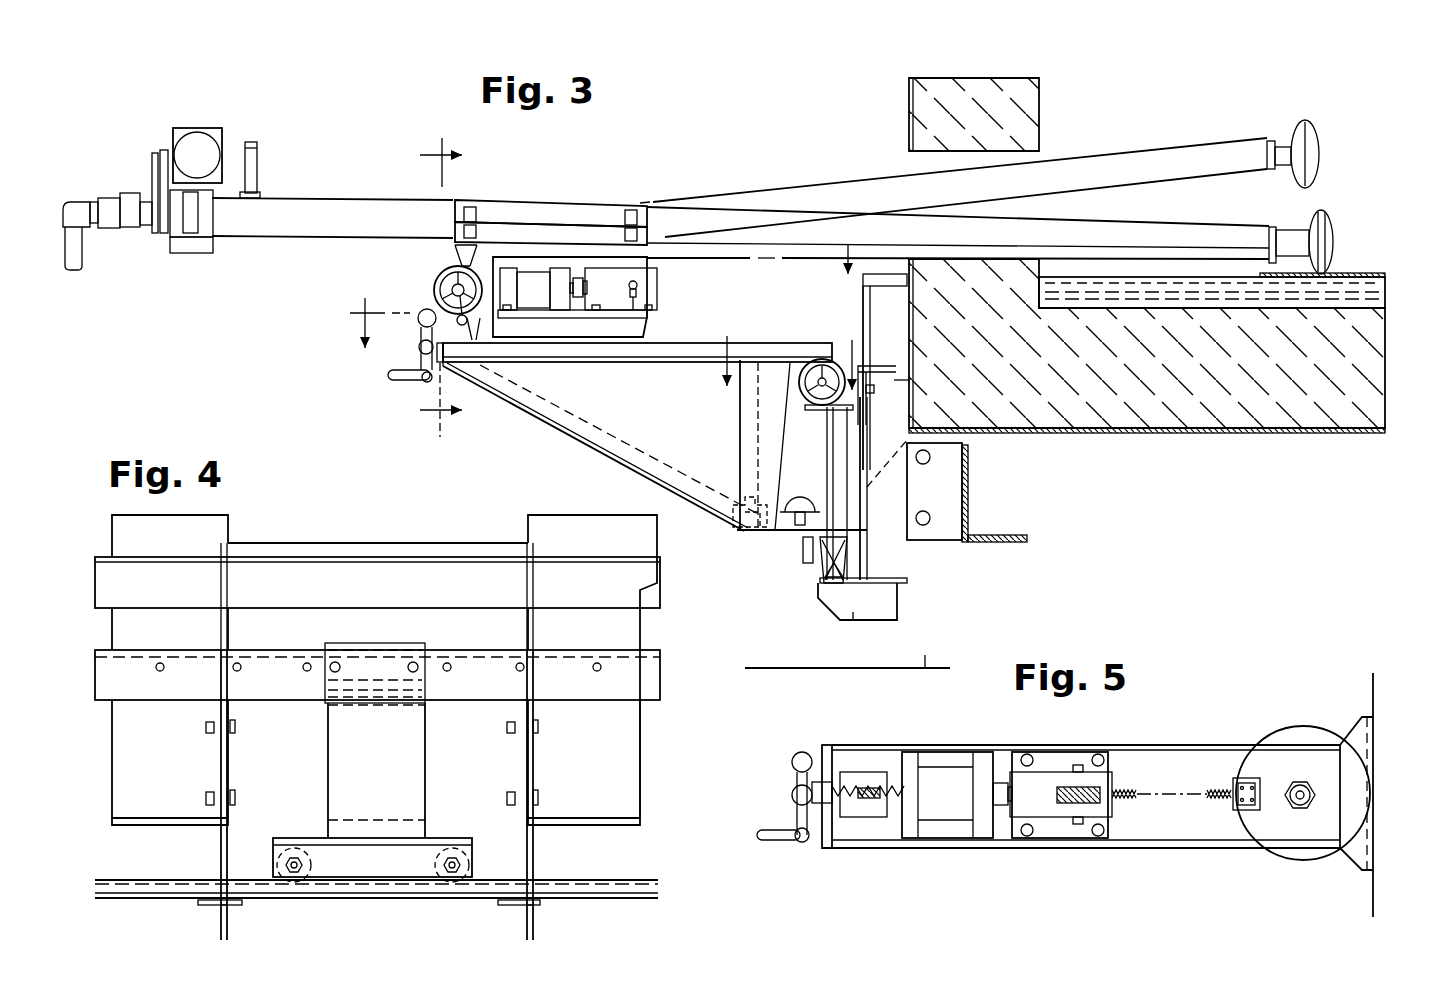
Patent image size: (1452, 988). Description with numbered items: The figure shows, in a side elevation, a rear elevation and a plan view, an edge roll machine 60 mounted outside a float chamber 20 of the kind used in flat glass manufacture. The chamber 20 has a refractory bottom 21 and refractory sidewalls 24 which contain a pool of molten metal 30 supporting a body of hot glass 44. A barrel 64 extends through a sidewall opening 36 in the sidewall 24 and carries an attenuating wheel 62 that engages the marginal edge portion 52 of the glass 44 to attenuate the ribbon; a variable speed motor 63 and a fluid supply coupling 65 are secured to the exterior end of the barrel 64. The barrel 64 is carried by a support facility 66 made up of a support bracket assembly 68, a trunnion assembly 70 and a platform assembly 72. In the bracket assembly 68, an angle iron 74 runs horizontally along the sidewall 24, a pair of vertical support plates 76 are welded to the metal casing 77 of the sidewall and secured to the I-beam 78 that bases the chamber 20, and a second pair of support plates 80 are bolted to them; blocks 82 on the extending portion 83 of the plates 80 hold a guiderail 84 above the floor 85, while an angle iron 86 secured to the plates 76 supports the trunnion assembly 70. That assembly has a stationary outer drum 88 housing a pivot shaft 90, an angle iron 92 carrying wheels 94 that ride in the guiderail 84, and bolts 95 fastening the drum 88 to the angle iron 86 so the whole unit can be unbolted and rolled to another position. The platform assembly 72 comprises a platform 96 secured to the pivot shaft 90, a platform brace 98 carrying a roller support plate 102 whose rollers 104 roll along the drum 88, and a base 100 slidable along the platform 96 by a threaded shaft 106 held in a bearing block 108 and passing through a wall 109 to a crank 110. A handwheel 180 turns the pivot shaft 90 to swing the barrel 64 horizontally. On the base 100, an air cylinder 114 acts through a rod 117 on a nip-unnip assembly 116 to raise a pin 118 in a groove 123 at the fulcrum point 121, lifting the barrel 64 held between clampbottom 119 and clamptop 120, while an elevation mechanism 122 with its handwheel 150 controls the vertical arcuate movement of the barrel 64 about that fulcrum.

In FIG. 3, the float chamber 20 is at (1170, 105).
In FIG. 4, the float chamber 20 is at (662, 630).
In FIG. 3, the refractory bottom 21 is at (1241, 420).
In FIG. 3, the refractory sidewall 24 is at (909, 112).
In FIG. 4, the refractory sidewall 24 is at (112, 532).
In FIG. 3, the molten metal 30 is at (1360, 290).
In FIG. 3, the sidewall opening 36 is at (886, 158).
In FIG. 4, the sidewall opening 36 is at (383, 531).
In FIG. 3, the body of hot glass 44 is at (1335, 272).
In FIG. 3, the marginal edge portion 52 is at (1265, 262).
In FIG. 3, the edge roll machine 60 is at (298, 284).
In FIG. 3, the attenuating wheel 62 is at (1334, 233).
In FIG. 3, the variable speed motor 63 is at (205, 141).
In FIG. 3, the barrel 64 is at (1170, 196).
In FIG. 3, the fluid supply coupling 65 is at (78, 205).
In FIG. 3, the support facility 66 is at (571, 467).
In FIG. 3, the support bracket assembly 68 is at (816, 612).
In FIG. 4, the support bracket assembly 68 is at (552, 836).
In FIG. 3, the trunnion assembly 70 is at (748, 569).
In FIG. 4, the trunnion assembly 70 is at (442, 750).
In FIG. 3, the platform assembly 72 is at (500, 413).
In FIG. 5, the platform assembly 72 is at (993, 870).
In FIG. 3, the angle iron 74 is at (907, 278).
In FIG. 4, the angle iron 74 is at (383, 594).
In FIG. 3, the support plates 76 is at (900, 434).
In FIG. 4, the support plates 76 is at (228, 640).
In FIG. 3, the metal casing 77 is at (896, 383).
In FIG. 3, the I-beam 78 is at (975, 543).
In FIG. 4, the I-beam 78 is at (601, 762).
In FIG. 3, the support plates 80 is at (898, 567).
In FIG. 4, the support plates 80 is at (218, 770).
In FIG. 3, the blocks 82 is at (895, 583).
In FIG. 4, the blocks 82 is at (205, 906).
In FIG. 3, the extending portion 83 is at (853, 612).
In FIG. 4, the extending portion 83 is at (218, 937).
In FIG. 3, the guiderail 84 is at (835, 578).
In FIG. 4, the guiderail 84 is at (163, 890).
In FIG. 3, the floor 85 is at (928, 660).
In FIG. 3, the angle iron 86 is at (878, 364).
In FIG. 4, the angle iron 86 is at (204, 687).
In FIG. 3, the outer drum 88 is at (823, 456).
In FIG. 4, the outer drum 88 is at (425, 728).
In FIG. 5, the outer drum 88 is at (1305, 727).
In FIG. 3, the pivot shaft 90 is at (815, 510).
In FIG. 5, the pivot shaft 90 is at (1297, 780).
In FIG. 3, the angle iron 92 is at (803, 545).
In FIG. 4, the angle iron 92 is at (430, 838).
In FIG. 3, the wheels 94 is at (825, 565).
In FIG. 4, the wheels 94 is at (275, 850).
In FIG. 3, the bolts 95 is at (882, 400).
In FIG. 4, the bolts 95 is at (308, 663).
In FIG. 3, the platform 96 is at (685, 352).
In FIG. 5, the platform 96 is at (1230, 842).
In FIG. 3, the platform brace 98 is at (590, 437).
In FIG. 3, the base 100 is at (553, 335).
In FIG. 5, the base 100 is at (975, 840).
In FIG. 3, the roller support plate 102 is at (735, 522).
In FIG. 3, the rollers 104 is at (748, 540).
In FIG. 5, the threaded shaft 106 is at (858, 772).
In FIG. 5, the bearing block 108 is at (1247, 780).
In FIG. 5, the wall 109 is at (828, 750).
In FIG. 3, the crank 110 is at (388, 380).
In FIG. 5, the crank 110 is at (777, 840).
In FIG. 3, the air cylinder 114 is at (549, 297).
In FIG. 5, the air cylinder 114 is at (960, 797).
In FIG. 3, the nip-unnip assembly 116 is at (621, 289).
In FIG. 5, the nip-unnip assembly 116 is at (1061, 795).
In FIG. 3, the rod 117 is at (617, 270).
In FIG. 5, the rod 117 is at (1002, 781).
In FIG. 3, the pin 118 is at (633, 298).
In FIG. 5, the pin 118 is at (1078, 765).
In FIG. 3, the clampbottom 119 is at (548, 232).
In FIG. 3, the clamptop 120 is at (563, 210).
In FIG. 3, the fulcrum point 121 is at (646, 291).
In FIG. 5, the fulcrum point 121 is at (1078, 825).
In FIG. 3, the elevation mechanism 122 is at (441, 262).
In FIG. 3, the groove 123 is at (640, 283).
In FIG. 3, the handwheel 150 is at (455, 298).
In FIG. 3, the handwheel 180 is at (808, 360).